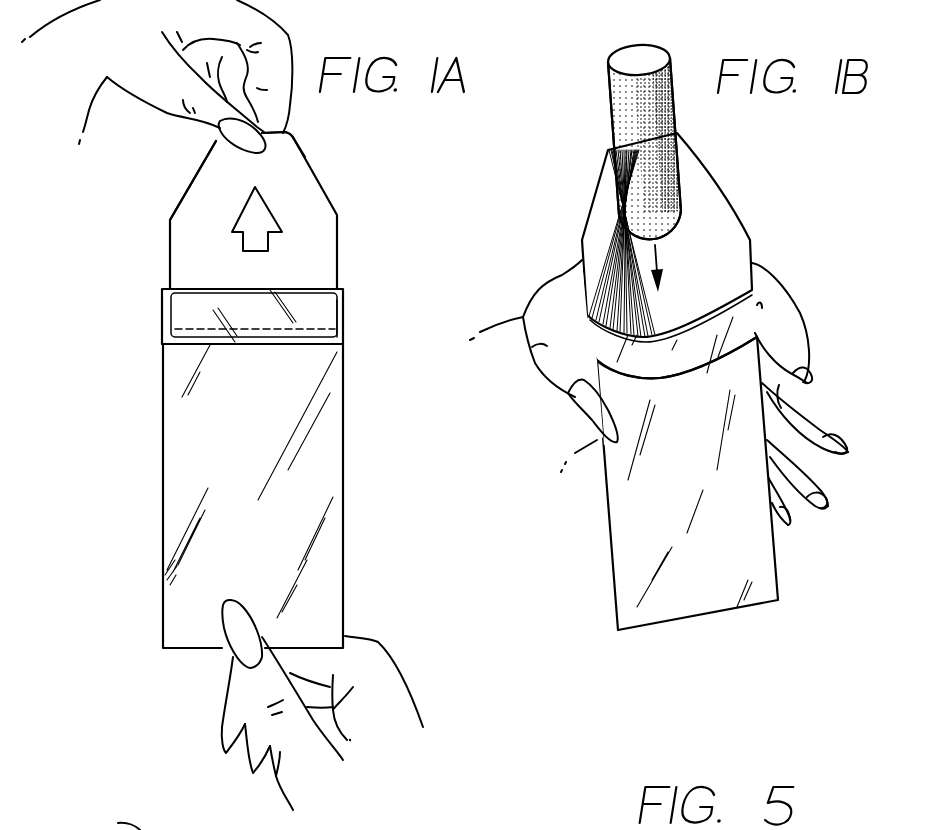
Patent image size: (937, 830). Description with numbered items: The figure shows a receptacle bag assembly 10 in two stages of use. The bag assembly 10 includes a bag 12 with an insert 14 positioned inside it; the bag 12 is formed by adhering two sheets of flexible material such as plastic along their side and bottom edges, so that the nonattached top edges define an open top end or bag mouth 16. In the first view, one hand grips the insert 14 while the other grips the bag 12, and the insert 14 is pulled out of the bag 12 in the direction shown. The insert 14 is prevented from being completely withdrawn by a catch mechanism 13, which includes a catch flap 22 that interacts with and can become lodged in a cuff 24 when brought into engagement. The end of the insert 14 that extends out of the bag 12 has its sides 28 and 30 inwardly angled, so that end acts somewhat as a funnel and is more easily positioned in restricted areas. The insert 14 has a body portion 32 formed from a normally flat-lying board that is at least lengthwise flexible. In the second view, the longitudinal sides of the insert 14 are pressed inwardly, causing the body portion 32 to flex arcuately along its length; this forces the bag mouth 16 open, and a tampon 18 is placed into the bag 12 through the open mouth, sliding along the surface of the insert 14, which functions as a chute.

In FIG. 1A, the bag assembly 10 is at (279, 373).
In FIG. 1A, the bag 12 is at (354, 515).
In FIG. 1B, the bag 12 is at (638, 536).
In FIG. 1A, the catch mechanism 13 is at (245, 339).
In FIG. 1A, the insert 14 is at (252, 193).
In FIG. 1B, the insert 14 is at (730, 182).
In FIG. 1B, the bag mouth 16 is at (730, 298).
In FIG. 1B, the tampon 18 is at (622, 85).
In FIG. 1A, the catch flap 22 is at (180, 313).
In FIG. 1A, the cuff 24 is at (333, 325).
In FIG. 1A, the side 28 is at (202, 162).
In FIG. 1A, the side 30 is at (305, 150).
In FIG. 1A, the body portion 32 is at (297, 222).